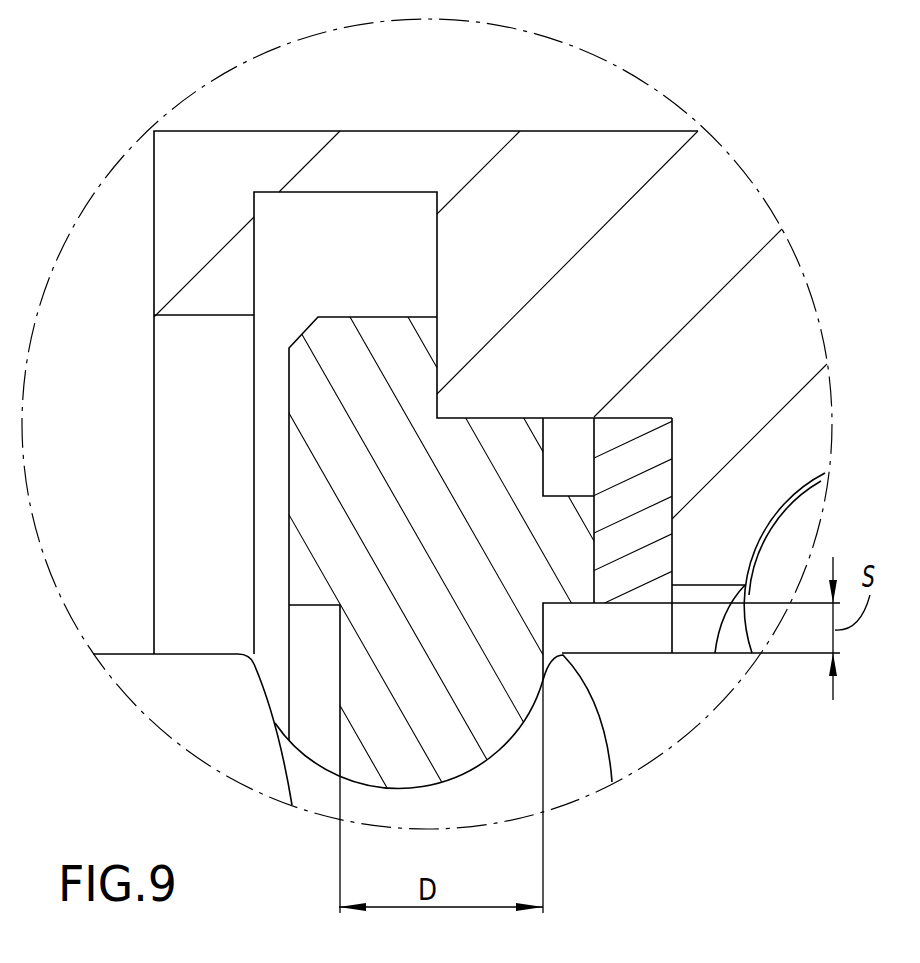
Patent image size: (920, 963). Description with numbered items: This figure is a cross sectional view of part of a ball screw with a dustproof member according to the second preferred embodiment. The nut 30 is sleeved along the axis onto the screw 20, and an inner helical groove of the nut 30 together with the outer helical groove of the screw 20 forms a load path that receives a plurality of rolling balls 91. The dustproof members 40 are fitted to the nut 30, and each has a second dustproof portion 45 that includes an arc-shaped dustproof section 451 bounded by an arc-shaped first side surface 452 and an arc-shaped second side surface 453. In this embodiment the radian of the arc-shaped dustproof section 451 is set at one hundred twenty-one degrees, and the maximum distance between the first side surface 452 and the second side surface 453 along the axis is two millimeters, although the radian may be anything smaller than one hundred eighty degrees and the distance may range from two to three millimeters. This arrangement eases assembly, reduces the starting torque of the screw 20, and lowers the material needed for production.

The screw 20 is at (127, 640).
The nut 30 is at (552, 160).
The dustproof member 40 is at (518, 410).
The second dustproof portion 45 is at (375, 713).
The arc-shaped dustproof section 451 is at (470, 774).
The arc-shaped first side surface 452 is at (338, 653).
The arc-shaped second side surface 453 is at (543, 631).
The rolling ball 91 is at (803, 518).